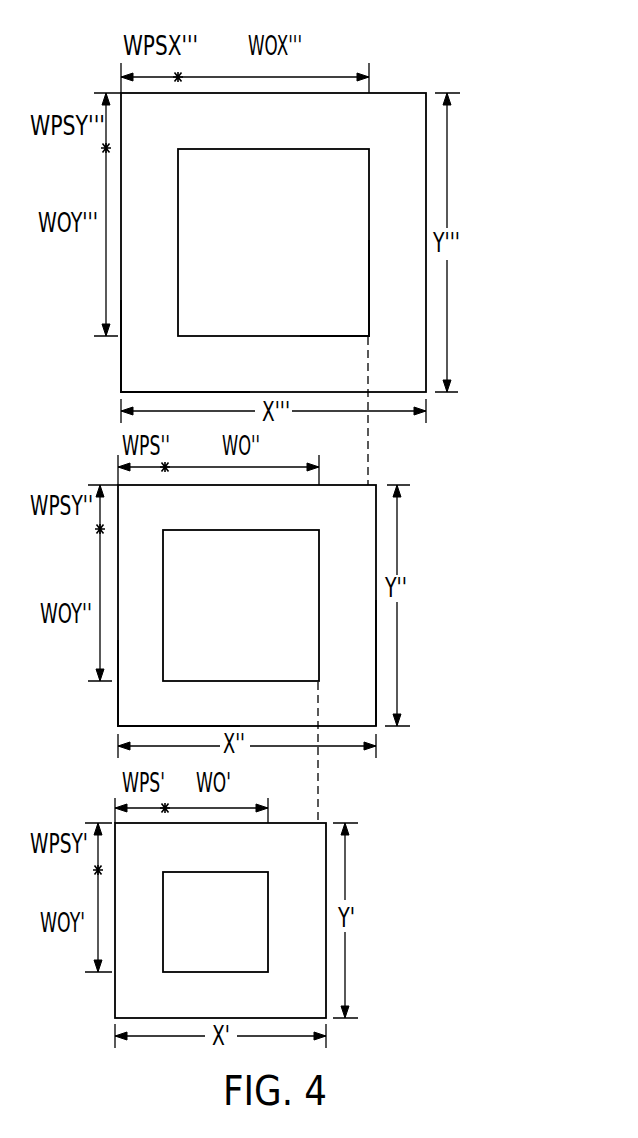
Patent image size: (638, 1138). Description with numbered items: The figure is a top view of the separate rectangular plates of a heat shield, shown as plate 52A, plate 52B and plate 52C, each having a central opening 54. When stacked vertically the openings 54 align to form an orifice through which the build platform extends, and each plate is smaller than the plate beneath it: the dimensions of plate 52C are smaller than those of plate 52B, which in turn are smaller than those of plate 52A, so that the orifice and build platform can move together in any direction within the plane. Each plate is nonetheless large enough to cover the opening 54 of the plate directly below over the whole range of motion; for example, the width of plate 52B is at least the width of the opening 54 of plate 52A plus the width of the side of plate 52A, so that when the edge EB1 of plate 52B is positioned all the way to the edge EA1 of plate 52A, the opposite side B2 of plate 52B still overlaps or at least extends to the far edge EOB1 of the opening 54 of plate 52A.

The central opening 54 is at (282, 259).
The plate 52A is at (123, 346).
The plate 52B is at (118, 687).
The plate 52C is at (123, 988).
The edge of plate 52A EA1 is at (121, 382).
The edge of plate 52B EB1 is at (118, 722).
The far edge of opening EOB1 is at (369, 297).
The opposite side of plate 52B B2 is at (368, 657).